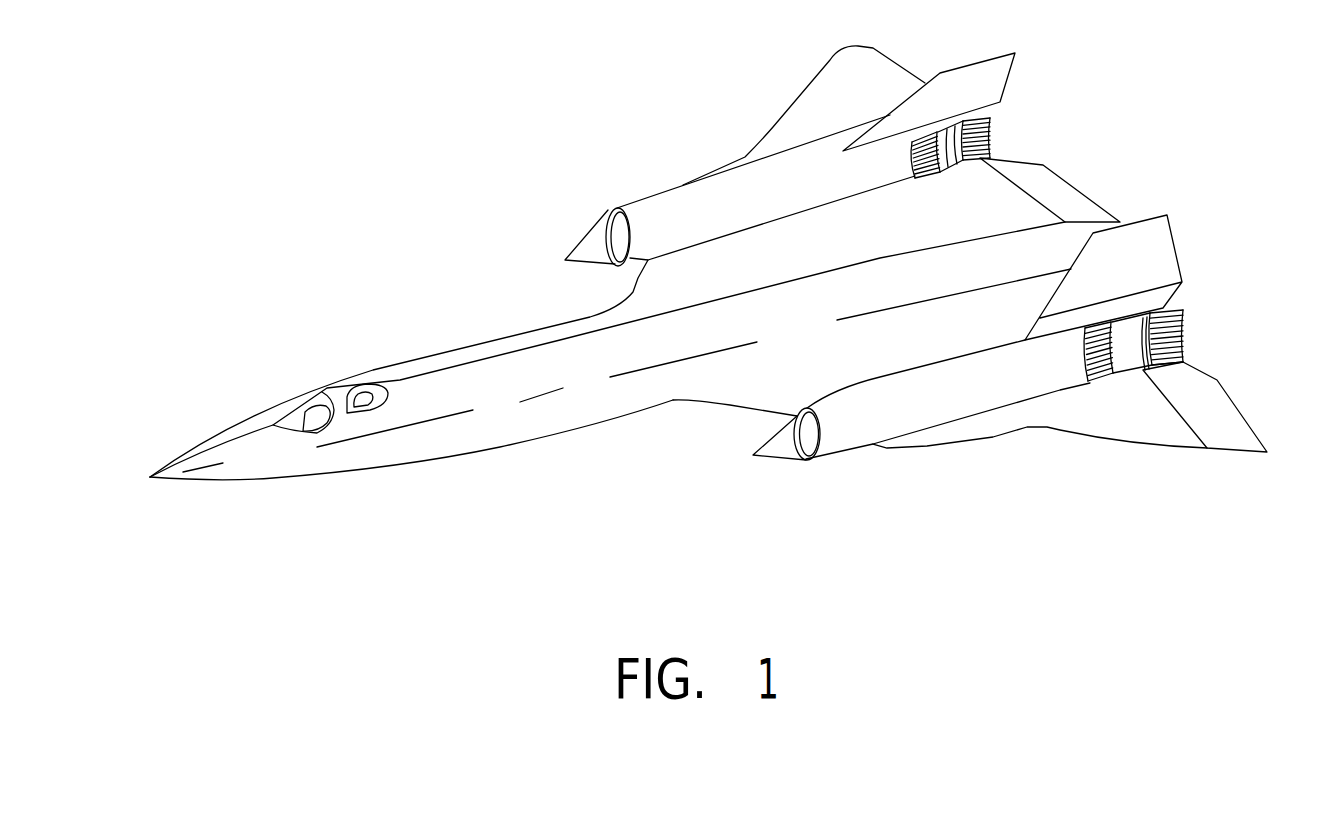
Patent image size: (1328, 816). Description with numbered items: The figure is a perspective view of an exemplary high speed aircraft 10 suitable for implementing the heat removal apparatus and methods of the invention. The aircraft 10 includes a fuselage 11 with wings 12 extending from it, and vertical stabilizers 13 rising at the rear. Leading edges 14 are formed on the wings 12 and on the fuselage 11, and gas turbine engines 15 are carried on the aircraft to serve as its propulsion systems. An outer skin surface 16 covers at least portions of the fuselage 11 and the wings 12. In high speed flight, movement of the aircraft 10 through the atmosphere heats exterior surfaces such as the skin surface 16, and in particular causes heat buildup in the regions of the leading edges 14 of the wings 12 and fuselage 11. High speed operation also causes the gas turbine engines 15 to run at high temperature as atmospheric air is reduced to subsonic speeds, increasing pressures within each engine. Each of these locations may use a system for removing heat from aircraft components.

The high speed aircraft 10 is at (667, 292).
The fuselage 11 is at (442, 408).
The wings 12 is at (842, 102).
The vertical stabilizers 13 is at (993, 73).
The leading edges 14 is at (155, 470).
The gas turbine engines 15 is at (657, 213).
The outer skin surface 16 is at (488, 360).